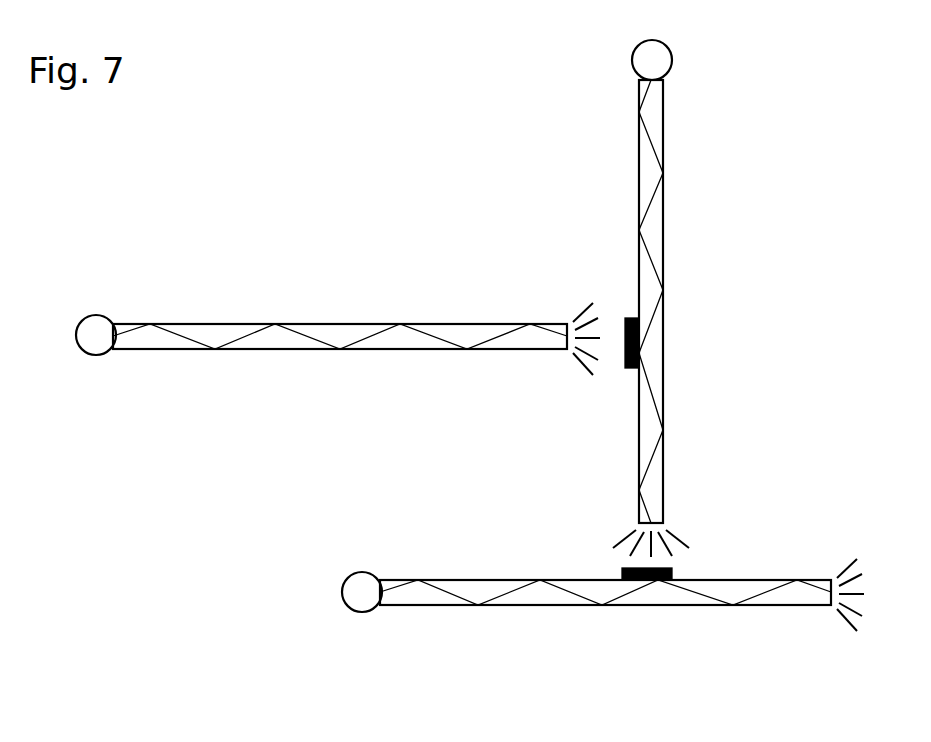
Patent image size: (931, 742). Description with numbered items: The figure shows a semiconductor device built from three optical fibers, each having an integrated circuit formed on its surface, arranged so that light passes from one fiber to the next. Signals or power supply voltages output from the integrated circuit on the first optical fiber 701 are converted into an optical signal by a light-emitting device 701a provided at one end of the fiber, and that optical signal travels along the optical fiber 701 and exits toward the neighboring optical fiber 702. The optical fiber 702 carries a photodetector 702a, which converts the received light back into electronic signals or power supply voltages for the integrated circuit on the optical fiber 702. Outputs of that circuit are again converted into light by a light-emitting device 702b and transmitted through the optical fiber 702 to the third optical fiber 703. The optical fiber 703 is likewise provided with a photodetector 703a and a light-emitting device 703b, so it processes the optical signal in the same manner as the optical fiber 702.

The optical fiber 701 is at (283, 350).
The light-emitting device 701a is at (97, 337).
The optical fiber 702 is at (663, 235).
The photodetector 702a is at (631, 343).
The light-emitting device 702b is at (652, 60).
The optical fiber 703 is at (535, 605).
The photodetector 703a is at (637, 578).
The light-emitting device 703b is at (355, 600).